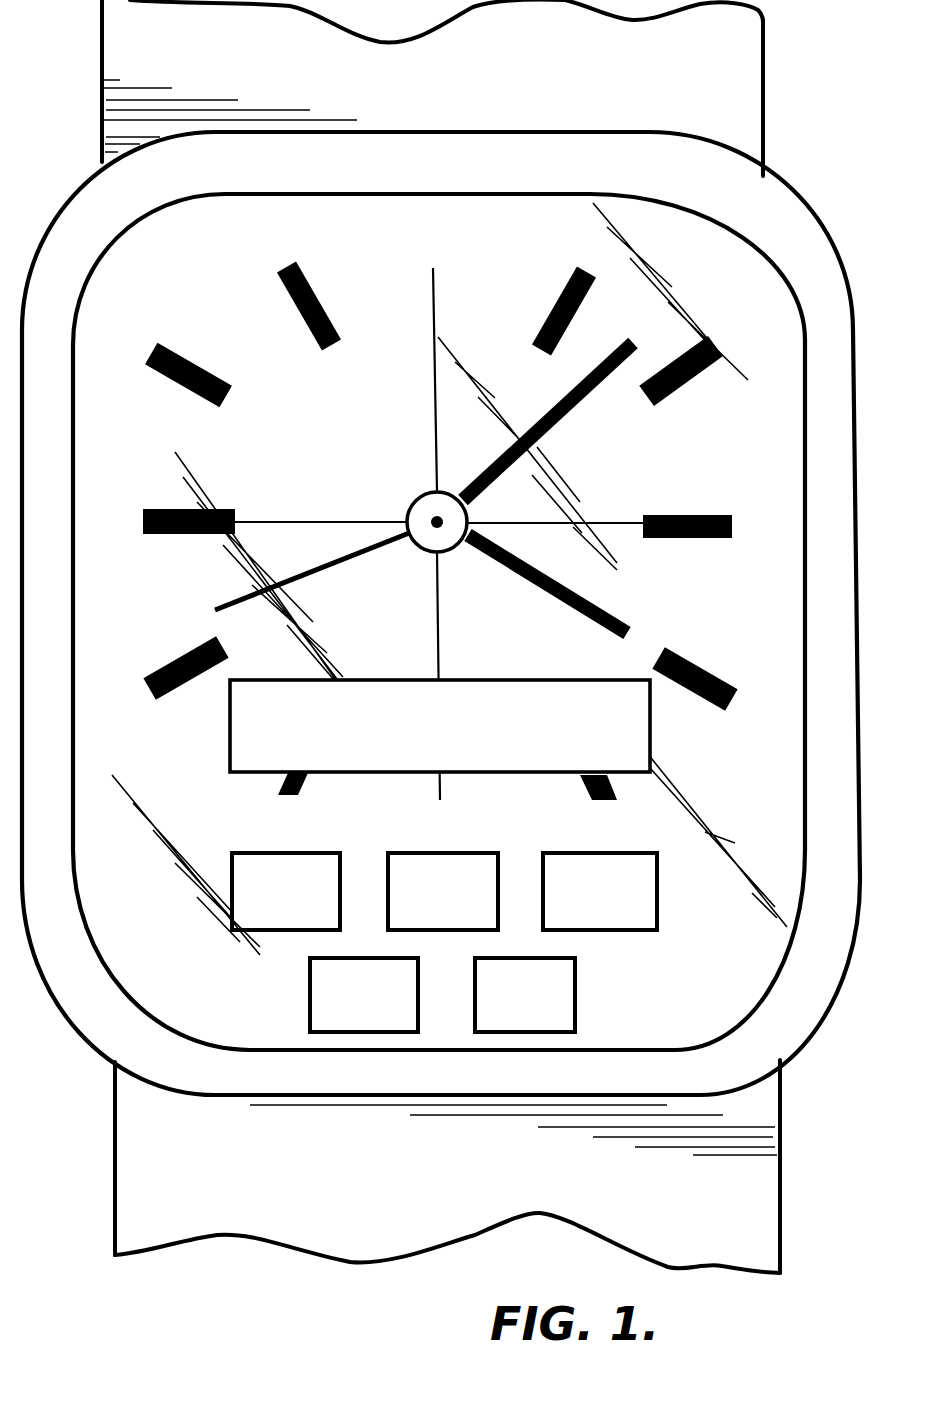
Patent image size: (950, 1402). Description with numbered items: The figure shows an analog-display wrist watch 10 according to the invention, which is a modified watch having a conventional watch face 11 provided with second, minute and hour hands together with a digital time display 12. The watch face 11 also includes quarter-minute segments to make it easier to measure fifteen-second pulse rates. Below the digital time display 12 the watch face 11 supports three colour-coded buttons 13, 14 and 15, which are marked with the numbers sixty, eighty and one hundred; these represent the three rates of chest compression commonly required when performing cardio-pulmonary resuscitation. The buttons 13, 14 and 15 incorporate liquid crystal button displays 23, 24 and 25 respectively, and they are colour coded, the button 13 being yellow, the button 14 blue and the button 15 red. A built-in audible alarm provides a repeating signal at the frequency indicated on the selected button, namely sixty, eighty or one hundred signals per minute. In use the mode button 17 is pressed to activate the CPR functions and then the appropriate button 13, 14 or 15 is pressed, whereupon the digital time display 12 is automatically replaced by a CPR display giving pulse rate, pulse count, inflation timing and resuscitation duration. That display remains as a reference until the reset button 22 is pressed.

The analog-display wrist watch 10 is at (790, 174).
The watch face 11 is at (289, 453).
The digital time display 12 is at (446, 738).
The button 13 is at (248, 853).
The liquid crystal button display 23 is at (323, 853).
The liquid crystal button display 24 is at (420, 853).
The button 14 is at (500, 853).
The button 15 is at (580, 853).
The liquid crystal button display 25 is at (613, 853).
The mode button 17 is at (310, 1000).
The reset button 22 is at (576, 1008).